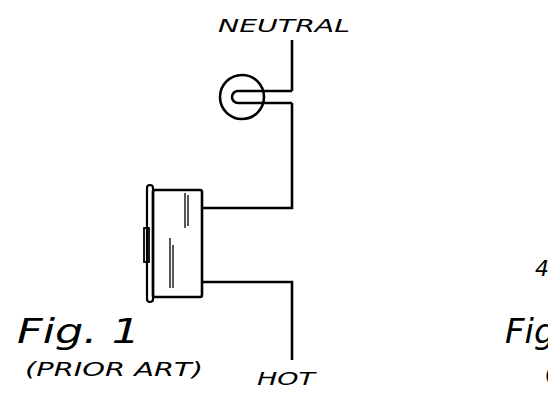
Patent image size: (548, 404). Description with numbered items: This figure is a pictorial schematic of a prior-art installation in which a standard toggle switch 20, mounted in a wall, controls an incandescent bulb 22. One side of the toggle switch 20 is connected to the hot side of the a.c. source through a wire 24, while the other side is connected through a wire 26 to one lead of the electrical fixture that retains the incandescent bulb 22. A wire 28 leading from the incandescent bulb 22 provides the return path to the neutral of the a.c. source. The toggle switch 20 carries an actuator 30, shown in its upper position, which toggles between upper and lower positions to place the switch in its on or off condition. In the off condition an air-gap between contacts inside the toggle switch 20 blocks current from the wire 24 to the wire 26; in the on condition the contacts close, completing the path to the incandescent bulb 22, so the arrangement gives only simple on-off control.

The toggle switch 20 is at (202, 244).
The incandescent bulb 22 is at (220, 97).
The wire 24 is at (292, 318).
The wire 26 is at (292, 172).
The wire 28 is at (292, 67).
The actuator 30 is at (143, 242).